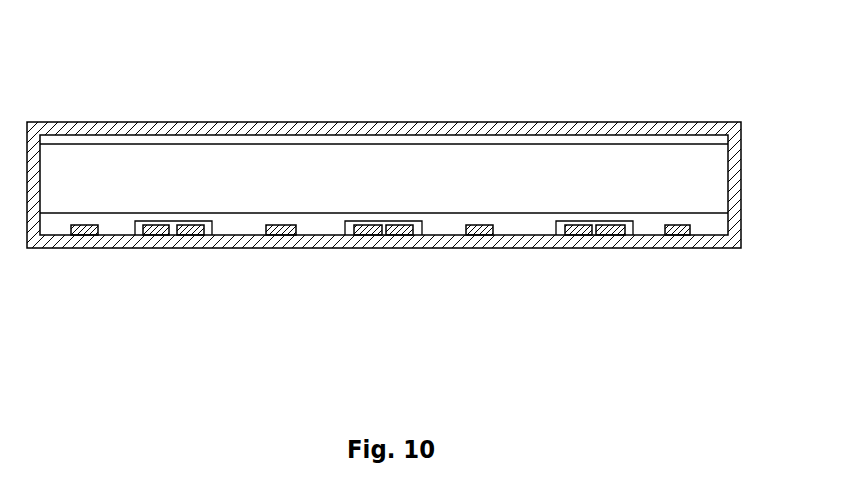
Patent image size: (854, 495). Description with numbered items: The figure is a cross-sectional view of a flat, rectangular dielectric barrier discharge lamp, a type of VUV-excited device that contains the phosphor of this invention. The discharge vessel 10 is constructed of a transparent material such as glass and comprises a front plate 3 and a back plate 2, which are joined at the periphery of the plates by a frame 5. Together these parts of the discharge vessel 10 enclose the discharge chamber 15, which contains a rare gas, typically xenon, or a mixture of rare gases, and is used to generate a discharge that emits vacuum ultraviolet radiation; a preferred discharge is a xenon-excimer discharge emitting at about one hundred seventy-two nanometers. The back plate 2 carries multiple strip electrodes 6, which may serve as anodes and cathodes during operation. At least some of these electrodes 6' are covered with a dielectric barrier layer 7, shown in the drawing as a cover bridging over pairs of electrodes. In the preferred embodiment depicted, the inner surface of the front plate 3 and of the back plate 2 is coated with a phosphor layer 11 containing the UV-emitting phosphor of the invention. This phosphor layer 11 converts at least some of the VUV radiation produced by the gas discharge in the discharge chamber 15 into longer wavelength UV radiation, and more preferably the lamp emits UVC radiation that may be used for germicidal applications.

The discharge vessel 10 is at (291, 74).
The phosphor layer 11 is at (210, 140).
The front plate 3 is at (360, 122).
The discharge chamber 15 is at (383, 186).
The strip electrodes 6 is at (380, 263).
The electrodes covered with dielectric barrier layer 6' is at (577, 279).
The back plate 2 is at (442, 248).
The dielectric barrier layer 7 is at (634, 224).
The frame 5 is at (740, 188).